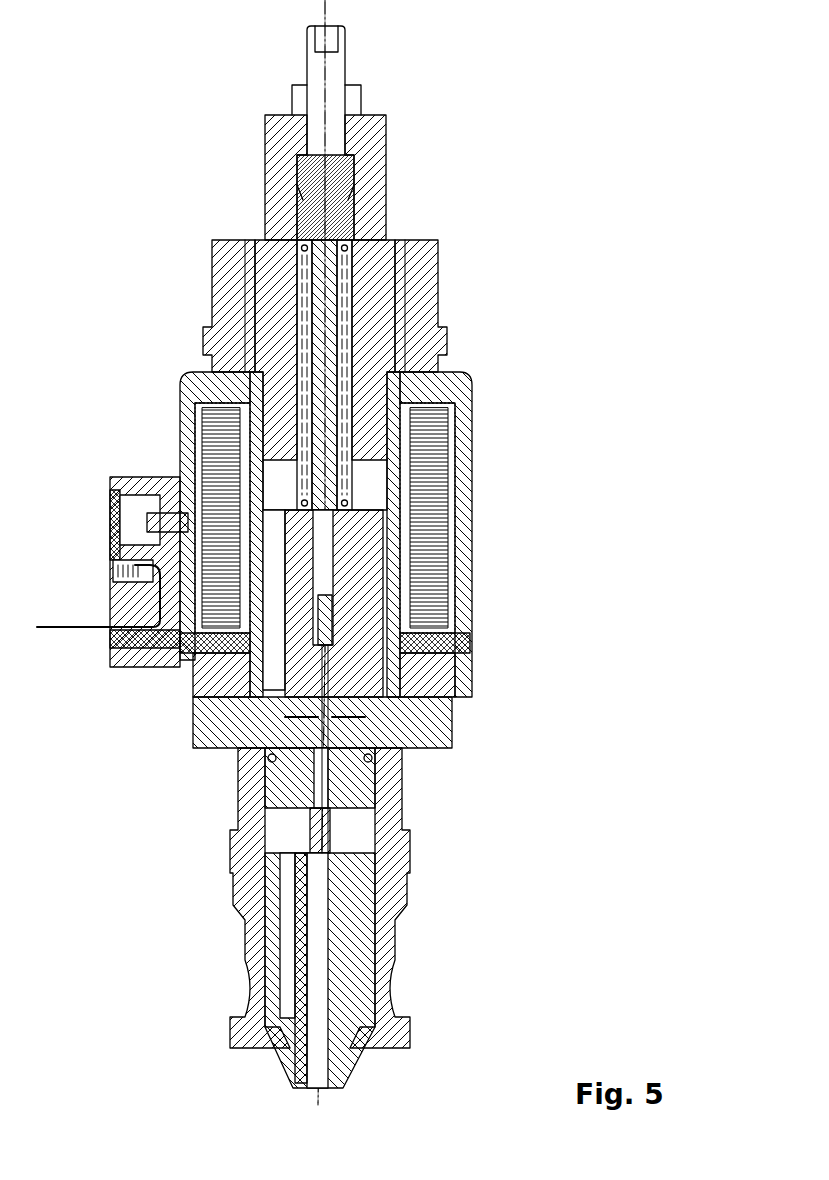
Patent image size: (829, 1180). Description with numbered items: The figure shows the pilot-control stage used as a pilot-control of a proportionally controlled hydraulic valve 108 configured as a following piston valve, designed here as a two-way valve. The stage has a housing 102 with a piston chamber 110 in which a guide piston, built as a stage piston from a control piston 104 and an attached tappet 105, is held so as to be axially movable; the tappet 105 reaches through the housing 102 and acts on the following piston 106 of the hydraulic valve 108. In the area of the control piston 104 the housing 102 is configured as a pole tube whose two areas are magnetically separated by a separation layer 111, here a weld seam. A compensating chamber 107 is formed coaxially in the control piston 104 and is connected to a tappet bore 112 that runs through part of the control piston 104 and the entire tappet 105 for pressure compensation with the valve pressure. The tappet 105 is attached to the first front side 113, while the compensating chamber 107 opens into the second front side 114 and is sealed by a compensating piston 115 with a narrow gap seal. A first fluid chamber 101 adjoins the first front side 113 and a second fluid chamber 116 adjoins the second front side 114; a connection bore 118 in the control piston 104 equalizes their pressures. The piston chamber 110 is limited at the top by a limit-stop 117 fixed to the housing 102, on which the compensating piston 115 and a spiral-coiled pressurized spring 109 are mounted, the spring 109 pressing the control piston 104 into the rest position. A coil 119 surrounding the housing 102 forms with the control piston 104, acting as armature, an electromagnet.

The first fluid chamber 101 is at (235, 752).
The housing 102 is at (193, 717).
The control piston 104 is at (360, 717).
The tappet 105 is at (310, 826).
The following piston 106 is at (358, 945).
The compensating chamber 107 is at (338, 612).
The hydraulic valve 108 is at (365, 866).
The pressurized spring 109 is at (360, 250).
The piston chamber 110 is at (275, 478).
The separation layer 111 is at (413, 522).
The tappet bore 112 is at (290, 830).
The first front side 113 is at (395, 742).
The second front side 114 is at (450, 490).
The compensating piston 115 is at (325, 305).
The second fluid chamber 116 is at (365, 470).
The limit-stop 117 is at (355, 165).
The connection bore 118 is at (262, 683).
The coil 119 is at (240, 470).